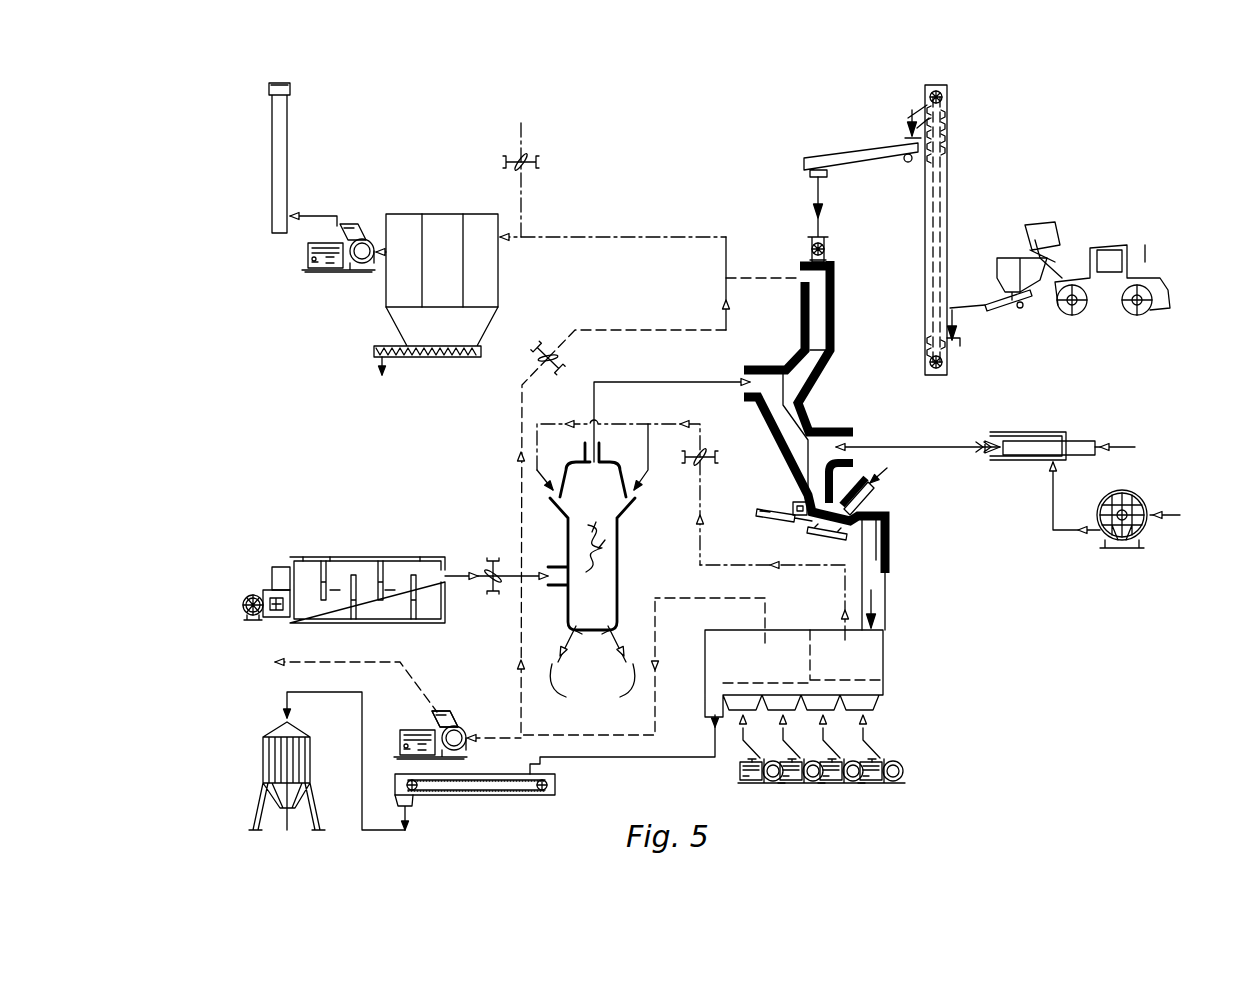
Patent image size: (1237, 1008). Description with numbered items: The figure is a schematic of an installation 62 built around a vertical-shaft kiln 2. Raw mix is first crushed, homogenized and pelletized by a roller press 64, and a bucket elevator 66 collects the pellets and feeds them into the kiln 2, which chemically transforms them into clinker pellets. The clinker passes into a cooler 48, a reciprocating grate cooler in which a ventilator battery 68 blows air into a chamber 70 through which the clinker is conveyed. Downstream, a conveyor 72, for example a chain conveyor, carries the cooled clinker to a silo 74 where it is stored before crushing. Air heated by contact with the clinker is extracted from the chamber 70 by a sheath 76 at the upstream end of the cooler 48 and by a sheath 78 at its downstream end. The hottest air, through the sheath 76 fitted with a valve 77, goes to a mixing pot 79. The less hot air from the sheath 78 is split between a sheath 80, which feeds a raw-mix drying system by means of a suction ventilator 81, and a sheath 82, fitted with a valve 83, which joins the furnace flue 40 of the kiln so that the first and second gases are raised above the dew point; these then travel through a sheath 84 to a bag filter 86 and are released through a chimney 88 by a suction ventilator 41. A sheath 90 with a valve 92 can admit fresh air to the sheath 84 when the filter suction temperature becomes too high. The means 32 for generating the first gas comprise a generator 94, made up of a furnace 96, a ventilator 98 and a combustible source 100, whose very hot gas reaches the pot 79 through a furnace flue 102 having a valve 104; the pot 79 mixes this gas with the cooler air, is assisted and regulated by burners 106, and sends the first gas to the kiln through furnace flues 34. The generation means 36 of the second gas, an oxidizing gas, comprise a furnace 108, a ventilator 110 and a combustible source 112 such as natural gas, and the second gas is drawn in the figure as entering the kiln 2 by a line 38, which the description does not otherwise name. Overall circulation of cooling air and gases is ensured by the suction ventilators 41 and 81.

The kiln 2 is at (850, 285).
The means for generating the first gas 32 is at (386, 405).
The furnace flues 34 is at (668, 382).
The generation means of the second gas 36 is at (1183, 422).
The hot air duct 38 is at (880, 447).
The furnace flue 40 is at (800, 276).
The suction ventilator 41 is at (358, 225).
The cooler 48 is at (797, 672).
The installation 62 is at (1139, 164).
The roller press 64 is at (1000, 265).
The bucket elevator 66 is at (925, 85).
The ventilator battery 68 is at (905, 797).
The chamber 70 is at (883, 655).
The conveyor 72 is at (482, 785).
The silo 74 is at (285, 770).
The sheath 76 is at (830, 568).
The valve 77 is at (712, 457).
The sheath 78 is at (708, 598).
The mixing pot 79 is at (556, 458).
The sheath 80 is at (488, 730).
The suction ventilator 81 is at (437, 712).
The sheath 82 is at (523, 712).
The valve 83 is at (552, 350).
The sheath 84 is at (648, 237).
The filter 86 is at (452, 255).
The chimney 88 is at (268, 84).
The sheath 90 is at (522, 208).
The valve 92 is at (520, 158).
The generator 94 is at (402, 553).
The furnace 96 is at (270, 612).
The ventilator 98 is at (242, 598).
The combustible source 100 is at (278, 578).
The furnace flue 102 is at (470, 578).
The valve 104 is at (493, 560).
The burners 106 is at (592, 668).
The furnace 108 is at (1033, 450).
The ventilator 110 is at (1123, 548).
The combustible source 112 is at (1124, 447).